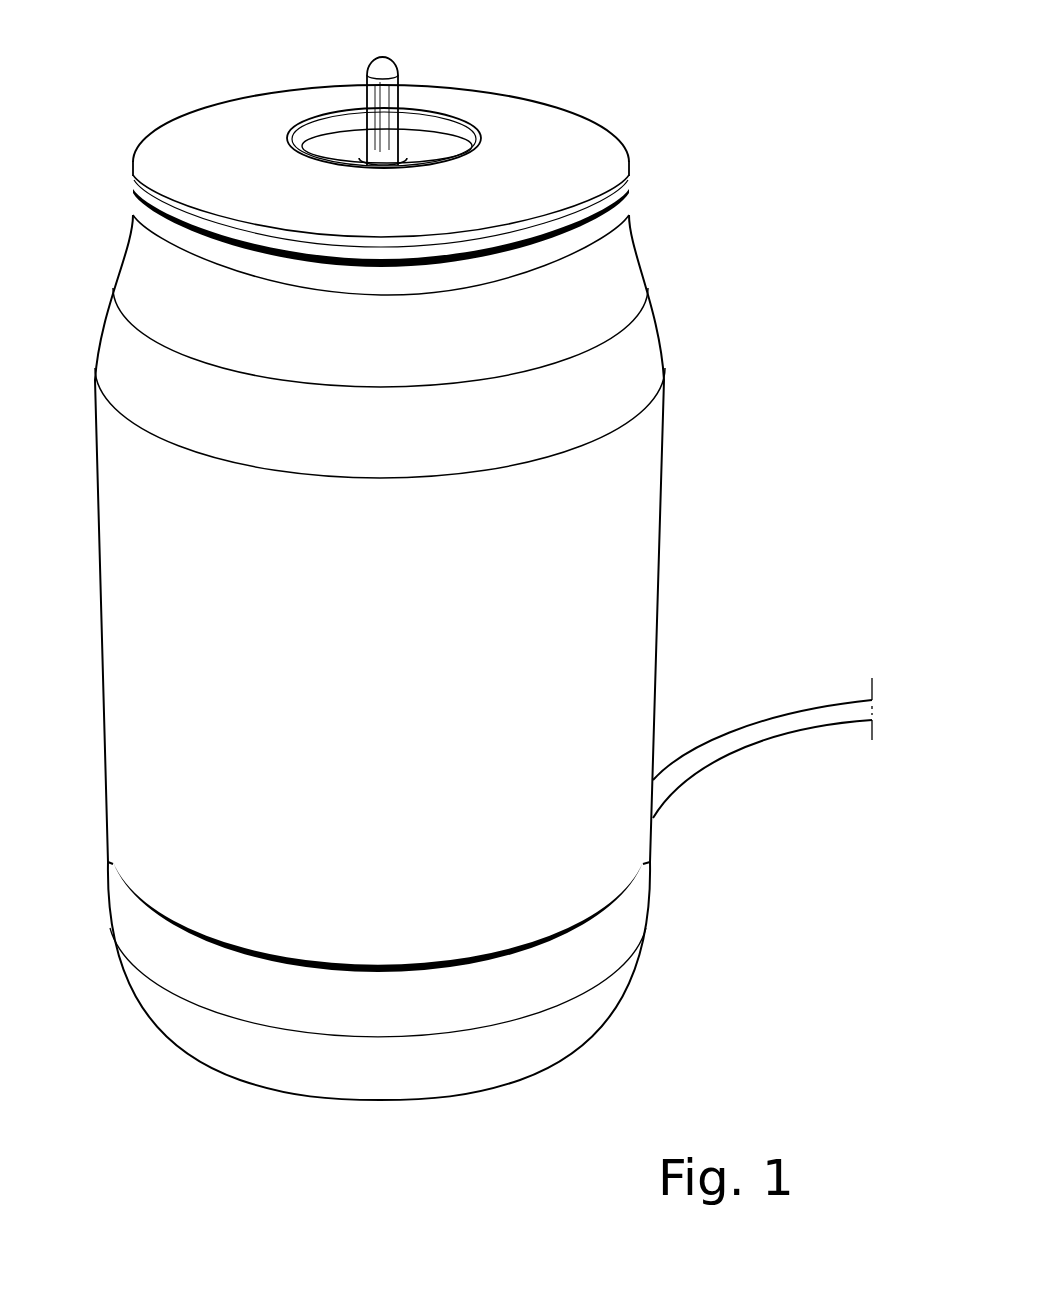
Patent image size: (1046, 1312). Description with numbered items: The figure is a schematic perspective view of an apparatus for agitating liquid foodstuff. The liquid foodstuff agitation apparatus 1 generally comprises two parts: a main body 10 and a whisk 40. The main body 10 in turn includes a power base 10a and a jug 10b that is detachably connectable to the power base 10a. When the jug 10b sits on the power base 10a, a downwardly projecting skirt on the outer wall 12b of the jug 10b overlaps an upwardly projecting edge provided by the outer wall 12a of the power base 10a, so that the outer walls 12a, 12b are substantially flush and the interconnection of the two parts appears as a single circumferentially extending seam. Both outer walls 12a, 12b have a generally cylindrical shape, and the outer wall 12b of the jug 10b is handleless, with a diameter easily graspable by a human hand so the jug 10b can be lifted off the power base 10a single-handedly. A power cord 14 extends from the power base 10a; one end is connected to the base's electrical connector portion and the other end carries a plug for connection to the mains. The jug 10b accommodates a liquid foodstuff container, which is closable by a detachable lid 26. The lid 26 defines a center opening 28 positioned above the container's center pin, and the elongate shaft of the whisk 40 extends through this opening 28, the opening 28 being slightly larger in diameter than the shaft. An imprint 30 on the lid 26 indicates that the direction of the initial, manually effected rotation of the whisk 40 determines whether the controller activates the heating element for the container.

The liquid foodstuff agitation apparatus 1 is at (576, 80).
The main body 10 is at (726, 469).
The power base 10a is at (605, 941).
The jug 10b is at (607, 572).
The outer wall of the power base 12a is at (145, 935).
The outer wall of the jug 12b is at (144, 760).
The power cord 14 is at (796, 720).
The lid 26 is at (553, 175).
The center opening 28 is at (405, 150).
The imprint 30 is at (325, 98).
The whisk 40 is at (385, 65).